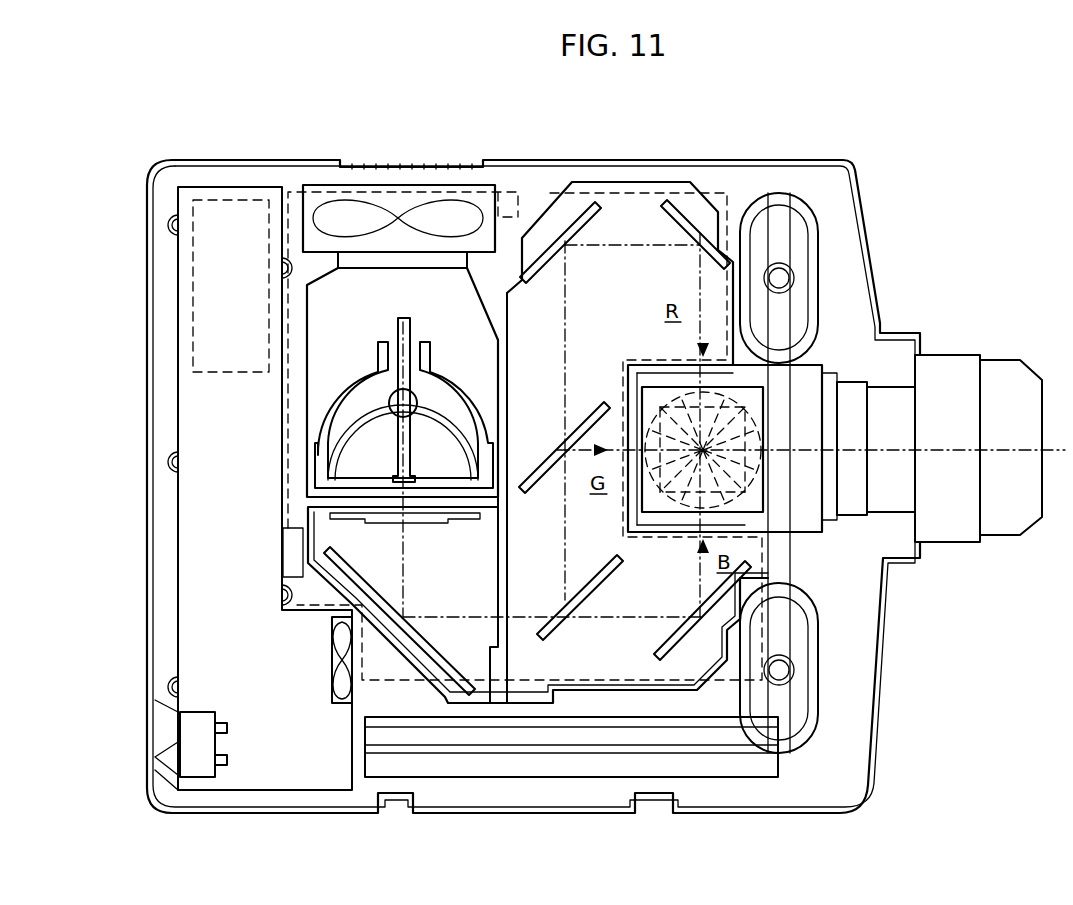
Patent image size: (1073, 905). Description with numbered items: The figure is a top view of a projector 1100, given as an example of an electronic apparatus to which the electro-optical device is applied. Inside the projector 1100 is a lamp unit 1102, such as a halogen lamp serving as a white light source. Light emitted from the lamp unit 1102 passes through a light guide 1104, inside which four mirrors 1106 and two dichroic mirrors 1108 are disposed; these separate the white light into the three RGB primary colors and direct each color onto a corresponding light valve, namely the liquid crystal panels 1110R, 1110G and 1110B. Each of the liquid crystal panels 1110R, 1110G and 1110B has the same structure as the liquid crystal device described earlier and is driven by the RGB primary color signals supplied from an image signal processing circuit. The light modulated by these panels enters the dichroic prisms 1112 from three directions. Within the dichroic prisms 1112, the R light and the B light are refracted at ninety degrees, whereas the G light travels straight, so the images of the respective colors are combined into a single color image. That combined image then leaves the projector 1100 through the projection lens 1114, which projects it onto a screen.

The projector 1100 is at (868, 168).
The lamp unit 1102 is at (450, 302).
The light guide 1104 is at (550, 193).
The mirrors 1106 is at (682, 220).
The dichroic mirror 1108 is at (558, 455).
The liquid crystal panel 1110R is at (667, 367).
The liquid crystal panel 1110G is at (632, 420).
The liquid crystal panel 1110B is at (665, 527).
The dichroic prisms 1112 is at (765, 507).
The projection lens 1114 is at (1010, 367).